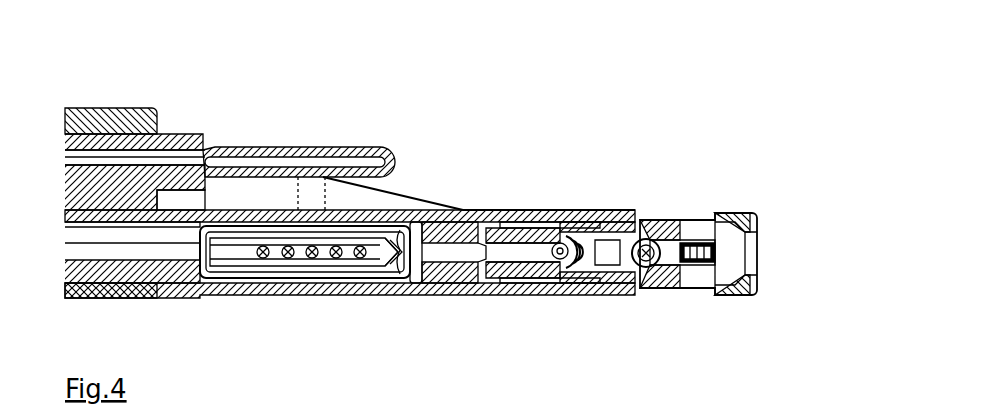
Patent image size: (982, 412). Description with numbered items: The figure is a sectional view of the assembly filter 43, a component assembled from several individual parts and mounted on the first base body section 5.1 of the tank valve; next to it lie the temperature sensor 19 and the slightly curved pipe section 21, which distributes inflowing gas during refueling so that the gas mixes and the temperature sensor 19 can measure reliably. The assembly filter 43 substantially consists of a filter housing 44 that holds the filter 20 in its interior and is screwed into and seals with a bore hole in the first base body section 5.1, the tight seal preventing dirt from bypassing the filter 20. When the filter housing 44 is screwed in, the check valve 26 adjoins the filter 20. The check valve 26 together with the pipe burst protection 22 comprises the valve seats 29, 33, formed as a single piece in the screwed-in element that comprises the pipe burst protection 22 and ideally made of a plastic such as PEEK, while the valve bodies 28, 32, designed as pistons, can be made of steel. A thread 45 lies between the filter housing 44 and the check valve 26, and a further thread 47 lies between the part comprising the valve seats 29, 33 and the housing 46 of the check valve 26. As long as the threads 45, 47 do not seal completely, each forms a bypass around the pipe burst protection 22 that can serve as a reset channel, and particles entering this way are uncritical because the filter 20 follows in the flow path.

The first base body section 5.1 is at (128, 108).
The temperature sensor 19 is at (380, 150).
The filter 20 is at (306, 266).
The curved pipe section 21 is at (408, 194).
The pipe burst protection 22 is at (720, 190).
The check valve 26 is at (520, 302).
The valve body 28 is at (562, 290).
The valve seat 29 is at (598, 290).
The valve body 32 is at (654, 244).
The valve seat 33 is at (648, 238).
The assembly filter 43 is at (593, 152).
The filter housing 44 is at (235, 297).
The thread 45 is at (445, 295).
The housing of the check valve 46 is at (535, 210).
The thread 47 is at (605, 212).